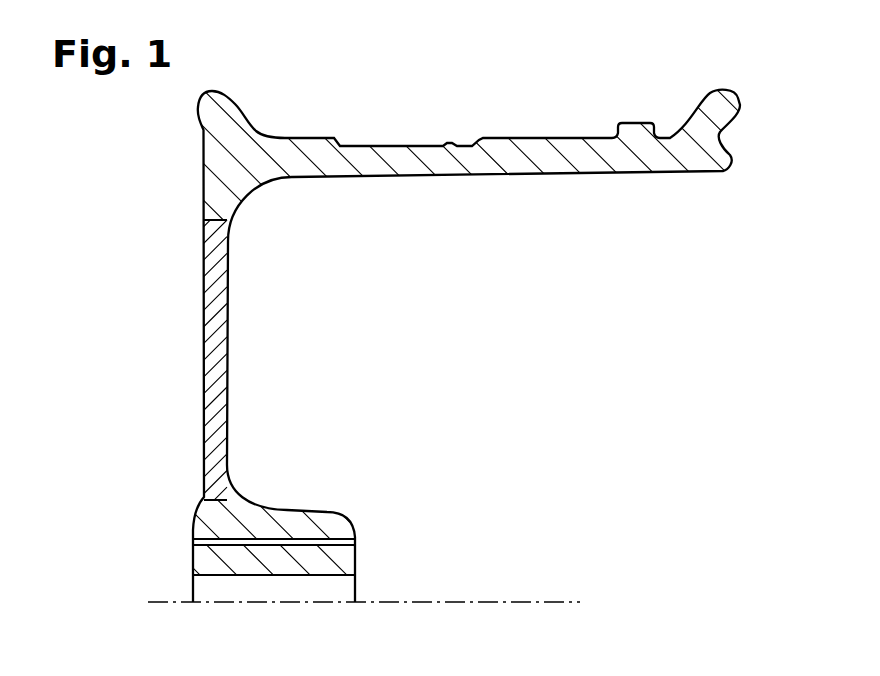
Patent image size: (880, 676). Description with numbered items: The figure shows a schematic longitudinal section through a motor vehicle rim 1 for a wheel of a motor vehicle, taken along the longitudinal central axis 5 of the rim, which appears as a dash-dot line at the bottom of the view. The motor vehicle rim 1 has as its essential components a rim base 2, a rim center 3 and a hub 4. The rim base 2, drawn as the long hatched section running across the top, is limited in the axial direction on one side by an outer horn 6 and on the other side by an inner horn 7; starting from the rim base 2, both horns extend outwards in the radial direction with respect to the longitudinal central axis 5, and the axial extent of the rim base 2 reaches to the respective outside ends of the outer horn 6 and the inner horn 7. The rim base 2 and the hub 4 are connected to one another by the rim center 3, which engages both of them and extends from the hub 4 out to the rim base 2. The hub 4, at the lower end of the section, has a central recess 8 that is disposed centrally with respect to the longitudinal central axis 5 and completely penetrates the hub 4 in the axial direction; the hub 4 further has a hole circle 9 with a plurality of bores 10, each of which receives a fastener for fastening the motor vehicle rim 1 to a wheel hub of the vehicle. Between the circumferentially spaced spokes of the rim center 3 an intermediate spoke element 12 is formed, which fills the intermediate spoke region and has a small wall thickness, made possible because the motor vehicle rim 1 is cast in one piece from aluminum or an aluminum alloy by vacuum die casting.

The motor vehicle rim 1 is at (126, 147).
The rim base 2 is at (512, 153).
The rim center 3 is at (245, 364).
The hub 4 is at (327, 508).
The longitudinal central axis 5 is at (521, 600).
The outer horn 6 is at (216, 110).
The inner horn 7 is at (718, 101).
The central recess 8 is at (207, 587).
The hole circle 9 is at (368, 531).
The bores 10 is at (221, 540).
The intermediate spoke element 12 is at (216, 309).